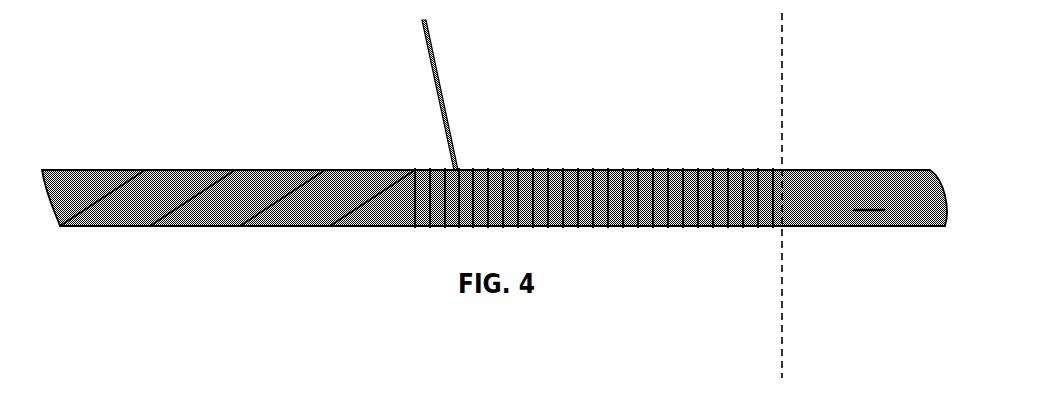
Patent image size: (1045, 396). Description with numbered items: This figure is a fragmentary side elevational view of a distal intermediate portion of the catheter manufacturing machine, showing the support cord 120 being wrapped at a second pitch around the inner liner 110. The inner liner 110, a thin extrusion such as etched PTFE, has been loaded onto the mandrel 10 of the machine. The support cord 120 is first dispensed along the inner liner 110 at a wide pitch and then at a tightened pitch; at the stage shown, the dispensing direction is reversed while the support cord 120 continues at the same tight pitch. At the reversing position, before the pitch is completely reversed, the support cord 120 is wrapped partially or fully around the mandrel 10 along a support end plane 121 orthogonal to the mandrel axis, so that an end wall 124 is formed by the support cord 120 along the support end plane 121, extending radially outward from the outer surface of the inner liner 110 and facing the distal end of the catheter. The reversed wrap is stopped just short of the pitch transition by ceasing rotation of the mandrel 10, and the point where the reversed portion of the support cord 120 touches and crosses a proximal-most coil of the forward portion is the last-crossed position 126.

The mandrel 10 is at (869, 196).
The inner liner 110 is at (173, 169).
The support cord 120 is at (443, 100).
The support end plane 121 is at (782, 92).
The end wall 124 is at (783, 190).
The last-crossed position 126 is at (467, 193).